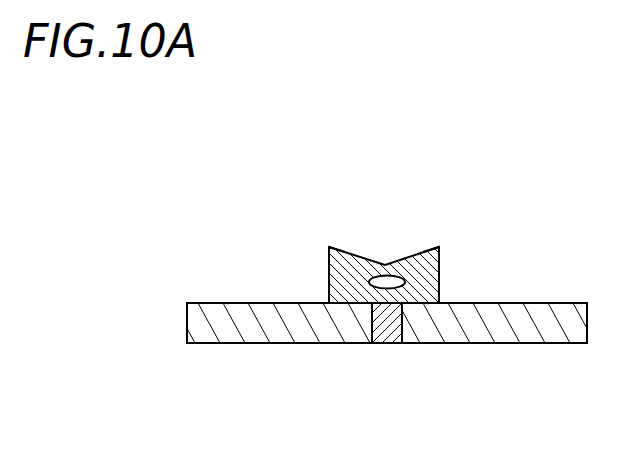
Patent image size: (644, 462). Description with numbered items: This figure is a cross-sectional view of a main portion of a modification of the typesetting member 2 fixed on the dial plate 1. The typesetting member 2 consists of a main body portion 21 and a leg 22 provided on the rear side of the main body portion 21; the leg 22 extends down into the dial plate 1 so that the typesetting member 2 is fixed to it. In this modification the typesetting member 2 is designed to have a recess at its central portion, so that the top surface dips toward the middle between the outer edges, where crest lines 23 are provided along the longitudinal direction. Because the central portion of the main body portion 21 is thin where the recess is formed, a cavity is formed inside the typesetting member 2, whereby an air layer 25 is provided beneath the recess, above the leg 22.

The dial plate 1 is at (396, 373).
The typesetting member 2 is at (407, 233).
The main body portion 21 is at (438, 273).
The leg 22 is at (371, 344).
The crest line 23 is at (320, 242).
The air layer 25 is at (375, 274).